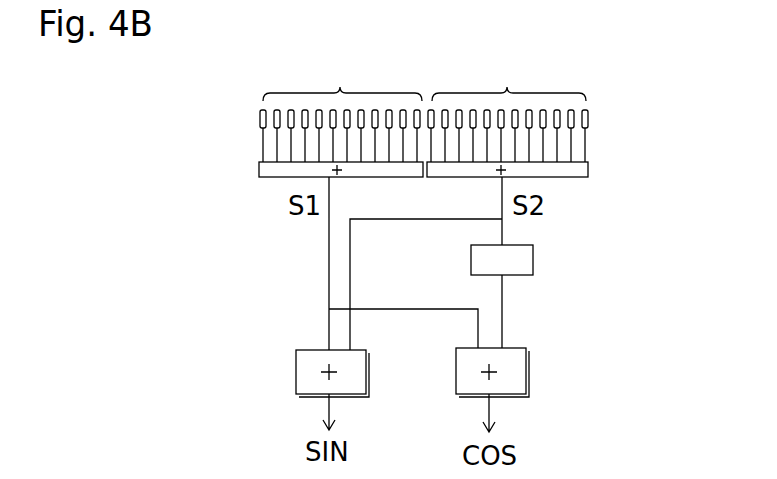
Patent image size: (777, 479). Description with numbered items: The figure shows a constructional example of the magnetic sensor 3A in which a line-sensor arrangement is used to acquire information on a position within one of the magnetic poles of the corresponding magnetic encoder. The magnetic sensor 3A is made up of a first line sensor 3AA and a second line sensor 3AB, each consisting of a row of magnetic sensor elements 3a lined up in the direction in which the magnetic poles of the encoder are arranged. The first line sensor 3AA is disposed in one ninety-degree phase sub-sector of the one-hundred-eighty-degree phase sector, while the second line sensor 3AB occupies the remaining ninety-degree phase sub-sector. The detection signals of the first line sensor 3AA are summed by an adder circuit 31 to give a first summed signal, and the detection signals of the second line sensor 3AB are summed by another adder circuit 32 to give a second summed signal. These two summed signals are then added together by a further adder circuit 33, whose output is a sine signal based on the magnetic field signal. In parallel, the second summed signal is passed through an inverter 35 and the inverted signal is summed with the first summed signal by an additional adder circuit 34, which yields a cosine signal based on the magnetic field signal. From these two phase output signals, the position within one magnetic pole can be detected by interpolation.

The magnetic sensor 3A is at (213, 110).
The first line sensor 3AA is at (342, 110).
The second line sensor 3AB is at (507, 110).
The magnetic sensor element 3a is at (274, 128).
The adder circuit 31 is at (262, 170).
The adder circuit 32 is at (583, 170).
The adder circuit 33 is at (303, 372).
The adder circuit 34 is at (520, 380).
The inverter 35 is at (533, 262).